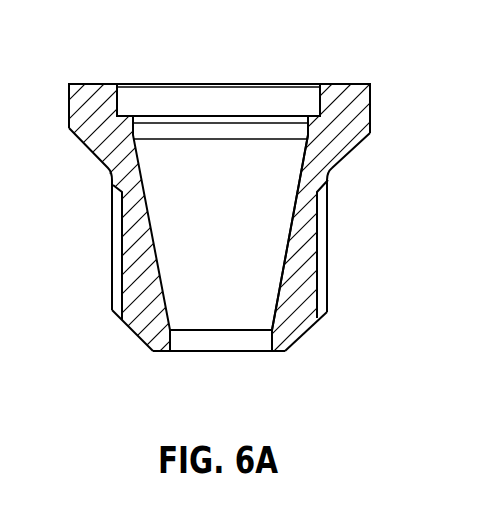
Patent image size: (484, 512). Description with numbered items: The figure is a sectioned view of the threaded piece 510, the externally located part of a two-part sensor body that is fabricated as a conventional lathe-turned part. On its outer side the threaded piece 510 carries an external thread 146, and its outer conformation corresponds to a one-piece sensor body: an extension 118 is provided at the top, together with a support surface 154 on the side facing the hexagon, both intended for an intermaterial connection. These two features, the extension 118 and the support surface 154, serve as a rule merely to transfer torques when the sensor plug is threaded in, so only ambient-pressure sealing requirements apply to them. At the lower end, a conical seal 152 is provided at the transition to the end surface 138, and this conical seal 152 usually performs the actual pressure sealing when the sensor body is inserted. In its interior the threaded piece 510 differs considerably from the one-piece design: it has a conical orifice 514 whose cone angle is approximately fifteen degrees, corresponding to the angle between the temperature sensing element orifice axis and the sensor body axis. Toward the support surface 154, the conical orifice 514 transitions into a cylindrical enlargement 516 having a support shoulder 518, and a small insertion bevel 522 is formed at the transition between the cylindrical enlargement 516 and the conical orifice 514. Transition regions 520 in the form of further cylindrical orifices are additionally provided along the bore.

The support surface 154 is at (93, 84).
The extension 118 is at (357, 97).
The conical orifice 514 is at (155, 255).
The cylindrical enlargement 516 is at (117, 103).
The insertion bevel 522 is at (307, 114).
The support shoulder 518 is at (305, 116).
The transition regions 520 is at (147, 88).
The threaded piece 510 is at (297, 233).
The external thread 146 is at (321, 272).
The conical seal 152 is at (305, 338).
The end surface 138 is at (161, 352).